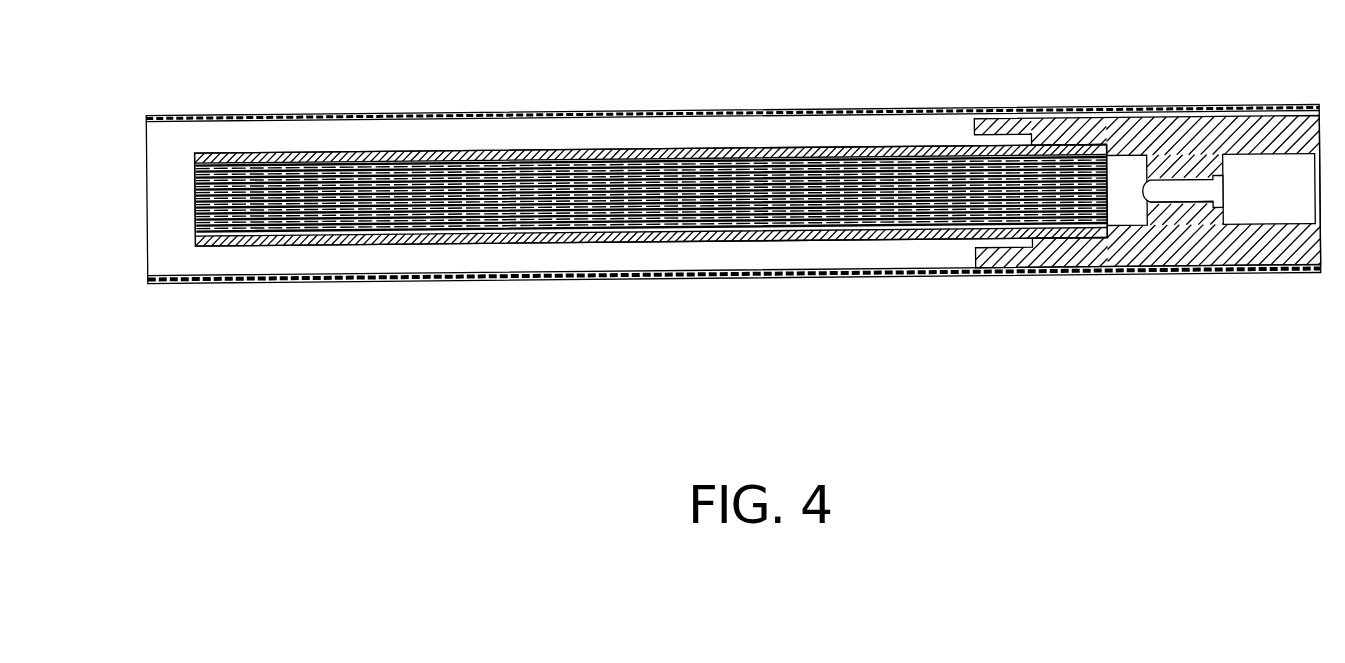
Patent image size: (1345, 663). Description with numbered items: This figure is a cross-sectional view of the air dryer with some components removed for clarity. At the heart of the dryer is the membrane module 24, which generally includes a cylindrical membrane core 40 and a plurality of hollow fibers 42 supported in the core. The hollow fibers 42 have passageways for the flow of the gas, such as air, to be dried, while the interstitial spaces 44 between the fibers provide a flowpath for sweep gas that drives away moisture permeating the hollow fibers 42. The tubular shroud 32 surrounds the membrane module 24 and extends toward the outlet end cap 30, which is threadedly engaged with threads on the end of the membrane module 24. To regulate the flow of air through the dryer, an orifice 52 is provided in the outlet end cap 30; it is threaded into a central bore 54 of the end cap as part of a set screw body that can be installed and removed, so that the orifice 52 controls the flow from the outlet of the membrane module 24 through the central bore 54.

The membrane module 24 is at (478, 243).
The outlet end cap 30 is at (1199, 112).
The tubular shroud 32 is at (932, 108).
The cylindrical membrane core 40 is at (797, 240).
The hollow fibers 42 is at (488, 170).
The interstitial spaces 44 is at (195, 223).
The orifice 52 is at (1145, 180).
The central bore 54 is at (1183, 203).